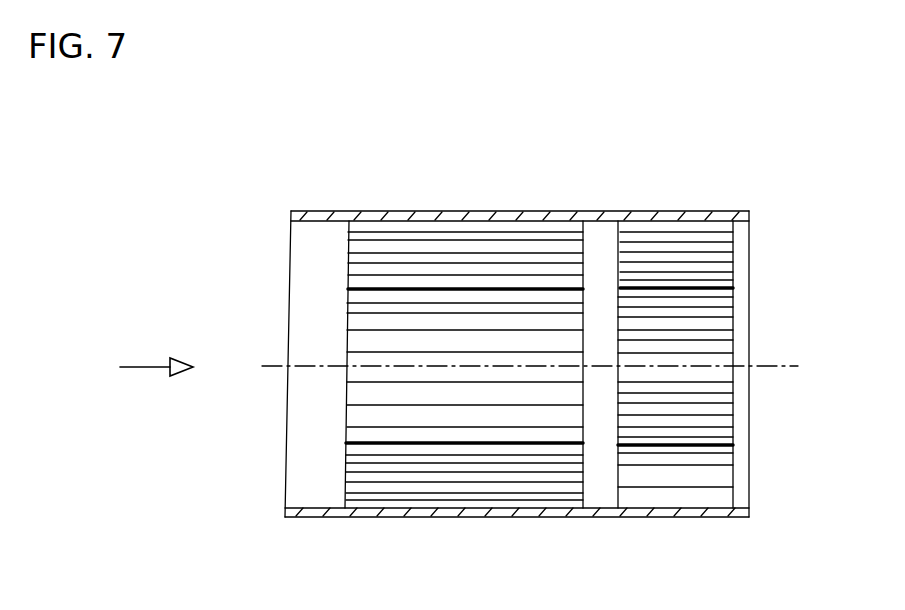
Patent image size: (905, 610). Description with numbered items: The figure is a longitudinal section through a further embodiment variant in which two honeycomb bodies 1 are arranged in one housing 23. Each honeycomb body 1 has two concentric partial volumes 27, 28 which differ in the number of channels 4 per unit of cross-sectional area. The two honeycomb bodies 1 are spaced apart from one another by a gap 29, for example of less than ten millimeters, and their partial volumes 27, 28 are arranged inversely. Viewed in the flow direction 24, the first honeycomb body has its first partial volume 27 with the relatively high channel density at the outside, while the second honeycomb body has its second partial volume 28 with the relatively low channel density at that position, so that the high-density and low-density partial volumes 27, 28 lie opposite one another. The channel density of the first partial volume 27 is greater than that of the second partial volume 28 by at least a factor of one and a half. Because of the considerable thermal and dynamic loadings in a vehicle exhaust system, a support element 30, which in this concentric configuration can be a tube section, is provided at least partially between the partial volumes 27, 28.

The honeycomb body 1 is at (515, 414).
The channels 4 is at (722, 250).
The housing 23 is at (298, 518).
The flow direction 24 is at (122, 367).
The first partial volume 27 is at (377, 258).
The second partial volume 28 is at (372, 322).
The gap 29 is at (593, 492).
The support element 30 is at (355, 443).